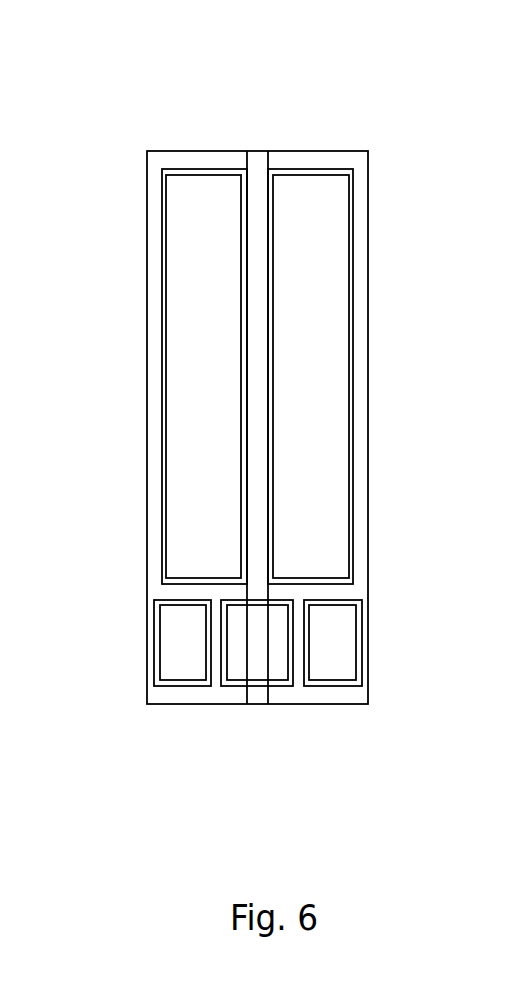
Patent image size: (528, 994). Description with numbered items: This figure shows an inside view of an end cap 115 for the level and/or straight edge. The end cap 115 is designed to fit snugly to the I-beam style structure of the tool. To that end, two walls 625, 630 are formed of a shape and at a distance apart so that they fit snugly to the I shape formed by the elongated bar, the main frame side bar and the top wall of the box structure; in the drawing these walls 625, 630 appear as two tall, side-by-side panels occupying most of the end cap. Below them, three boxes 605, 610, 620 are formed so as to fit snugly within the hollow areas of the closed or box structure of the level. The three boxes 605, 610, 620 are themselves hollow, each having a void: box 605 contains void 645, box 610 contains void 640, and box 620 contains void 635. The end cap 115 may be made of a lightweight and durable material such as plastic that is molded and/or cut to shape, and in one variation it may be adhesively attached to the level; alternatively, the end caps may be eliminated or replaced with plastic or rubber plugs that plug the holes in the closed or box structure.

The end cap 115 is at (150, 102).
The wall 625 is at (242, 326).
The wall 630 is at (275, 363).
The box 605 is at (163, 683).
The void 645 is at (172, 625).
The box 610 is at (283, 683).
The void 640 is at (255, 645).
The box 620 is at (357, 625).
The void 635 is at (319, 646).